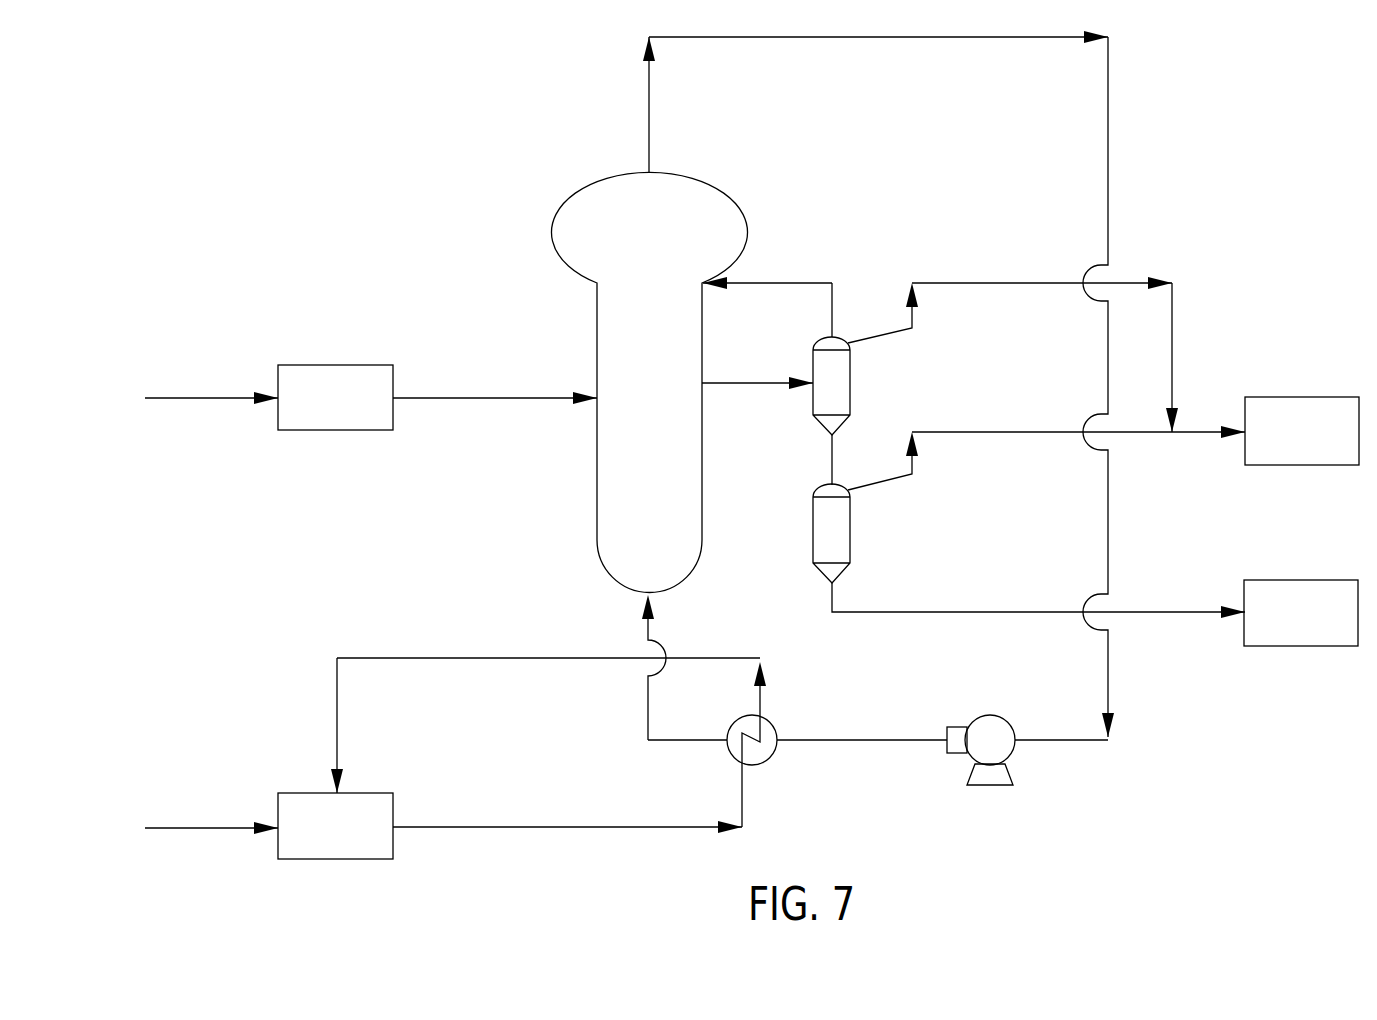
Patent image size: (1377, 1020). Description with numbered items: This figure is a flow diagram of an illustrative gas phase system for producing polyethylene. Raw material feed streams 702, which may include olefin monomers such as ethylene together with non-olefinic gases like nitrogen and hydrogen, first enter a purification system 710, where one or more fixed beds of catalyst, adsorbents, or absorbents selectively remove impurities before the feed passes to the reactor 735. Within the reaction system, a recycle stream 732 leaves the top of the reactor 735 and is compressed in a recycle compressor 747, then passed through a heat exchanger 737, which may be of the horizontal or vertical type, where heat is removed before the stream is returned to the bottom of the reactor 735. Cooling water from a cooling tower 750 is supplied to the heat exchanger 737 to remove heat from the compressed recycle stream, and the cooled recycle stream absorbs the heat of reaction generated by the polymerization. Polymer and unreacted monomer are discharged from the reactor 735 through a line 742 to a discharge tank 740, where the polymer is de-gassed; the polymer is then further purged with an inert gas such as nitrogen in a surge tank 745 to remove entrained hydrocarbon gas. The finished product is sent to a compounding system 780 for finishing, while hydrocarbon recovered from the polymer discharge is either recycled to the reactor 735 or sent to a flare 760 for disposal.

The raw material feed streams 702 is at (178, 398).
The purification system 710 is at (315, 411).
The recycle stream 732 is at (787, 37).
The reactor 735 is at (626, 241).
The heat exchanger 737 is at (766, 762).
The discharge tank 740 is at (852, 375).
The line 742 is at (746, 383).
The surge tank 745 is at (852, 535).
The recycle compressor 747 is at (985, 712).
The cooling tower 750 is at (315, 840).
The flare 760 is at (1280, 444).
The compounding system 780 is at (1279, 625).